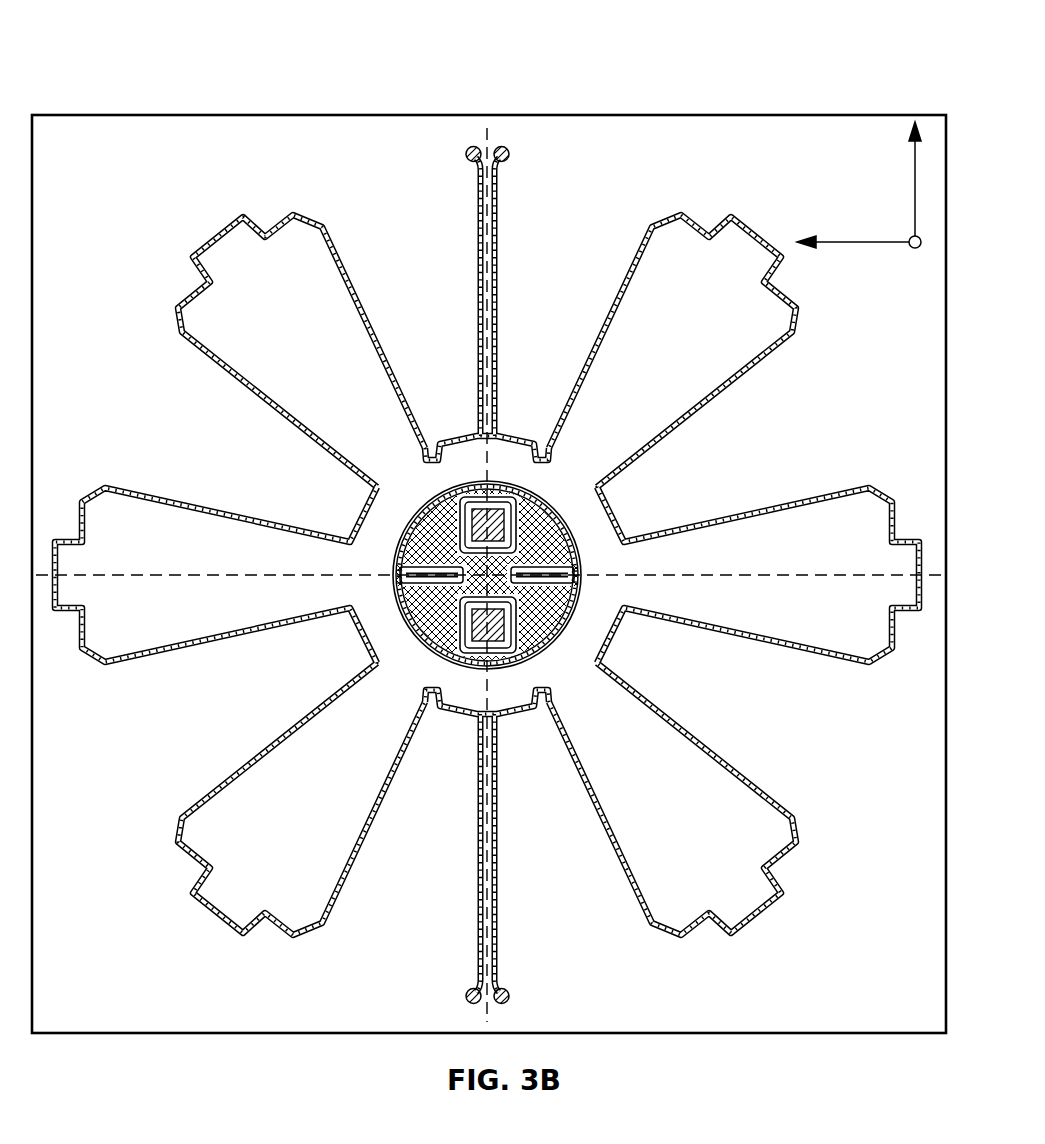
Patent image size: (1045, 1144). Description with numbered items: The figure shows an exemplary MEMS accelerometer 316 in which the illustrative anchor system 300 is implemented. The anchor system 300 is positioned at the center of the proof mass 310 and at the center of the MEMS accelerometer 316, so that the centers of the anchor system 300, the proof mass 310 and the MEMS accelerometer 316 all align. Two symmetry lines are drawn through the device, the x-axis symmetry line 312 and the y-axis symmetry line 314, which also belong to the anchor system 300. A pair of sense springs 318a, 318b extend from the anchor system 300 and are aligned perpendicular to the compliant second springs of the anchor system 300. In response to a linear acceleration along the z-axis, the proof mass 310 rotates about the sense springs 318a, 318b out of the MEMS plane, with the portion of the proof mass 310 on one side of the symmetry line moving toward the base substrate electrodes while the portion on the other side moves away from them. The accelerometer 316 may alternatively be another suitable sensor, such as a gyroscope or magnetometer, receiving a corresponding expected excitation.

The MEMS accelerometer 316 is at (489, 521).
The anchor system 300 is at (583, 522).
The proof mass 310 is at (691, 820).
The x-axis symmetry line 312 is at (486, 462).
The y-axis symmetry line 314 is at (197, 577).
The sense spring 318a is at (498, 290).
The sense spring 318b is at (480, 855).